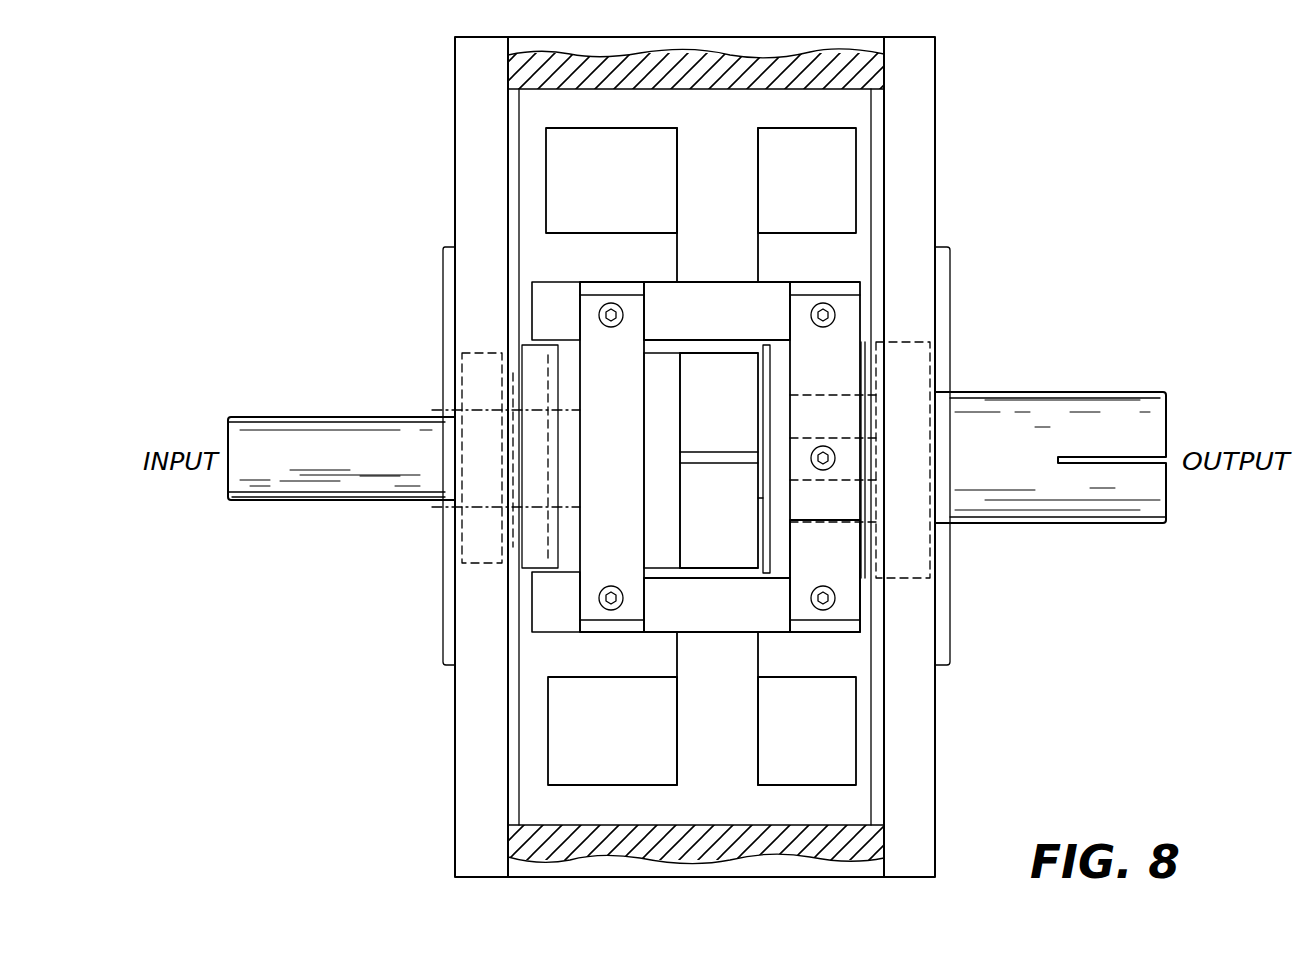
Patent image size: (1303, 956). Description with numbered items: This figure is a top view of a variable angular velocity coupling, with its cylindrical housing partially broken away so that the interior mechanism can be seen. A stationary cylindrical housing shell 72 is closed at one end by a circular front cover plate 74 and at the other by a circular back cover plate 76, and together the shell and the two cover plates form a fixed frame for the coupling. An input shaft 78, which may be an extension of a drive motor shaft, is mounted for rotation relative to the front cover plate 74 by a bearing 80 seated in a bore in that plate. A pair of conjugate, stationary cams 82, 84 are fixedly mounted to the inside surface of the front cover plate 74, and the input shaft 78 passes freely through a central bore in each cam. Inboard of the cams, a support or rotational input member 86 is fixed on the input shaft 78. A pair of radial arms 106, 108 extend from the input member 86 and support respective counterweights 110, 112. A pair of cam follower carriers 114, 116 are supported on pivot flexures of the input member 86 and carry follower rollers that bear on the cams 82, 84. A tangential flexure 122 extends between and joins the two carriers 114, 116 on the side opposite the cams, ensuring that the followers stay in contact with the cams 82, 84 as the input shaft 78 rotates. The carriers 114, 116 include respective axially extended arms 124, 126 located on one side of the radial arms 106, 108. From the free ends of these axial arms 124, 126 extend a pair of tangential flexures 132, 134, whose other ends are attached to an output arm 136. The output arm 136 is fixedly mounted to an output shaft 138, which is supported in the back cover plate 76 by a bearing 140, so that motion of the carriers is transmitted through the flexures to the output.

The cylindrical housing shell 72 is at (520, 850).
The front cover plate 74 is at (473, 780).
The back cover plate 76 is at (920, 707).
The input shaft 78 is at (295, 497).
The bearing 80 is at (490, 504).
The stationary cam 82 is at (570, 380).
The stationary cam 84 is at (662, 520).
The rotational input member 86 is at (735, 424).
The radial arm 106 is at (740, 199).
The radial arm 108 is at (735, 710).
The counterweight 110 is at (612, 199).
The counterweight 112 is at (645, 763).
The cam follower carrier 114 is at (557, 297).
The cam follower carrier 116 is at (563, 633).
The tangential flexure 122 is at (630, 482).
The axially extended arm 124 is at (740, 322).
The axially extended arm 126 is at (704, 602).
The tangential flexure 132 is at (845, 372).
The tangential flexure 134 is at (845, 572).
The output arm 136 is at (860, 468).
The output shaft 138 is at (1098, 512).
The bearing 140 is at (928, 560).